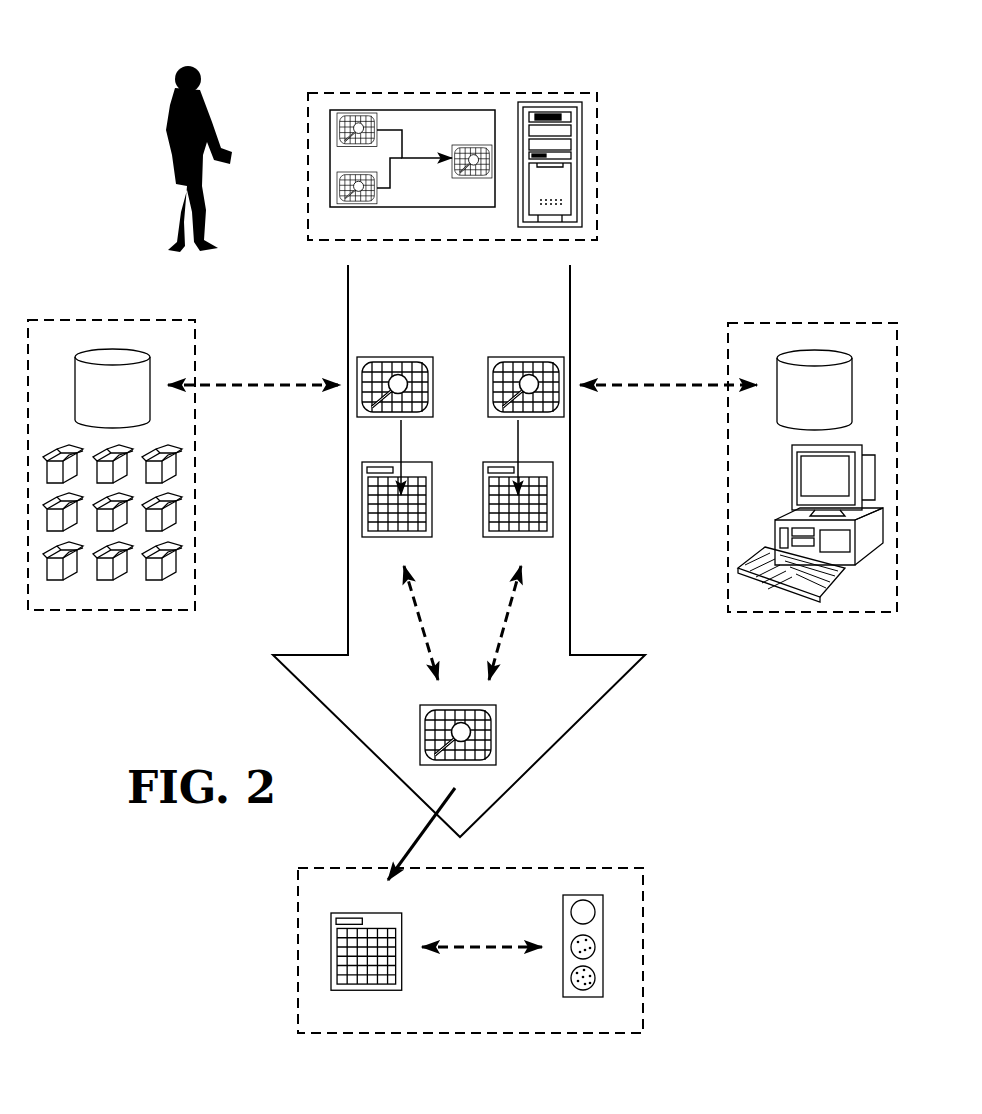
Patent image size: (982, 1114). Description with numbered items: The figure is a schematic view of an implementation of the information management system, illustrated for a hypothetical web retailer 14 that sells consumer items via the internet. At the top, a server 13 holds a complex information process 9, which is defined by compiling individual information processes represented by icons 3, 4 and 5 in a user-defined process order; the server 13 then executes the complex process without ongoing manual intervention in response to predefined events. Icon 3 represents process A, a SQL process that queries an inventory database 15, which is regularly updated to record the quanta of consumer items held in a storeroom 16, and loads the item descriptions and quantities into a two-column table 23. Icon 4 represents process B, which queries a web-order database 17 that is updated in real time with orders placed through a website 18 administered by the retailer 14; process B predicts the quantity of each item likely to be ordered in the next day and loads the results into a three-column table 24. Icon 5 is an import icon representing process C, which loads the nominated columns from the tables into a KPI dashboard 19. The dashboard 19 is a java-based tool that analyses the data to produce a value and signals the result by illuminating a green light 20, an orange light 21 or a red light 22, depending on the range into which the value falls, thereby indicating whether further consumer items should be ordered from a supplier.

The icon 3 is at (346, 205).
The icon 4 is at (350, 117).
The icon 5 is at (471, 178).
The complex information process 9 is at (437, 130).
The server 13 is at (616, 150).
The web retailer 14 is at (178, 66).
The inventory database 15 is at (112, 355).
The storeroom 16 is at (112, 622).
The web-order database 17 is at (815, 355).
The website 18 is at (811, 610).
The KPI dashboard 19 is at (668, 956).
The green light 20 is at (583, 900).
The orange light 21 is at (594, 946).
The red light 22 is at (578, 990).
The table 23 is at (373, 511).
The table 24 is at (542, 511).